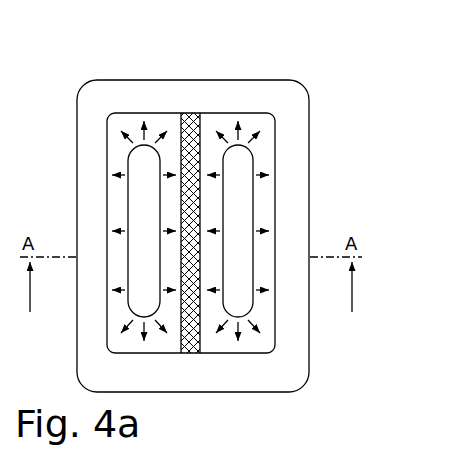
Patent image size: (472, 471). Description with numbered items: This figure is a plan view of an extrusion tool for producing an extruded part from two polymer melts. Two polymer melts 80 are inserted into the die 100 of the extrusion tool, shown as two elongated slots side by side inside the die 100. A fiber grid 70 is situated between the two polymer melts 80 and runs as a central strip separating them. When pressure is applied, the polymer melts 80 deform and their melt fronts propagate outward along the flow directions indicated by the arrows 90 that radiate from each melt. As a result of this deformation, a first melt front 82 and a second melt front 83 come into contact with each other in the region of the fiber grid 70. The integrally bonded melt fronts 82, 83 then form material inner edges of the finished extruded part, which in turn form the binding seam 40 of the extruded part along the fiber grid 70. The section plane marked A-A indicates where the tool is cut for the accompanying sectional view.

The die 100 is at (288, 86).
The binding seam 40 is at (187, 117).
The fiber grid 70 is at (200, 268).
The polymer melt 80 is at (184, 293).
The first melt front 82 is at (161, 192).
The second melt front 83 is at (226, 199).
The flow direction arrows 90 is at (258, 228).